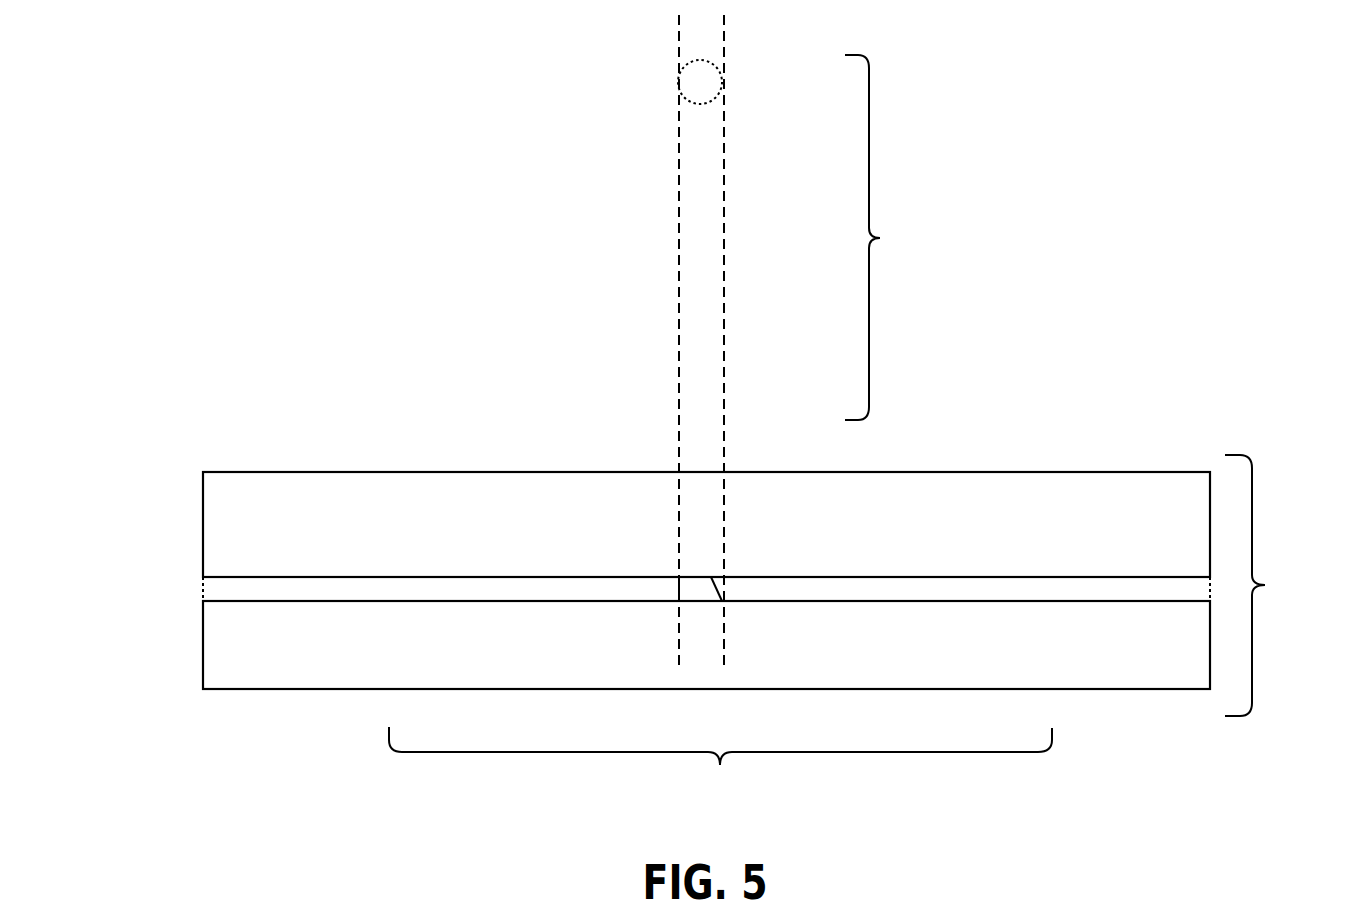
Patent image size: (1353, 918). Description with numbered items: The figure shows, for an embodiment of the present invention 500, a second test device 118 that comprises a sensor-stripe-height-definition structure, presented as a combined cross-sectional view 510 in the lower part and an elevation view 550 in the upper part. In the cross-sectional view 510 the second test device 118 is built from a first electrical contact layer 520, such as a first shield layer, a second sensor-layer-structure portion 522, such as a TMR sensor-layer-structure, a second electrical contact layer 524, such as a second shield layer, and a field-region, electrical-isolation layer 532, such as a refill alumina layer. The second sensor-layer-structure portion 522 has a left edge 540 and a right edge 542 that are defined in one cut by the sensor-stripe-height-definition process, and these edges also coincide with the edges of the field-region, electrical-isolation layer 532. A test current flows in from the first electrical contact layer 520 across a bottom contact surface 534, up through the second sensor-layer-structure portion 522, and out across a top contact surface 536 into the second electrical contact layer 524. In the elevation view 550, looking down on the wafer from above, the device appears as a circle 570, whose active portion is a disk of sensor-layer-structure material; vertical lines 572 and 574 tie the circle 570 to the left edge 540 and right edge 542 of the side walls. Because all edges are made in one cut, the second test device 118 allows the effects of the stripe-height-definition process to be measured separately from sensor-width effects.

The embodiment of the present invention 500 is at (271, 141).
The cross-sectional view 510 is at (1268, 585).
The first electrical contact layer 520 is at (1003, 672).
The second electrical contact layer 524 is at (945, 563).
The field-region, electrical-isolation layer 532 is at (530, 588).
The bottom contact surface 534 is at (703, 602).
The top contact surface 536 is at (697, 577).
The left edge 540 is at (677, 592).
The second sensor-layer-structure portion 522 is at (700, 589).
The right edge 542 is at (722, 602).
The second test device 118 is at (720, 764).
The elevation view 550 is at (888, 237).
The circle 570 is at (679, 88).
The vertical line 572 is at (679, 163).
The vertical line 574 is at (724, 170).